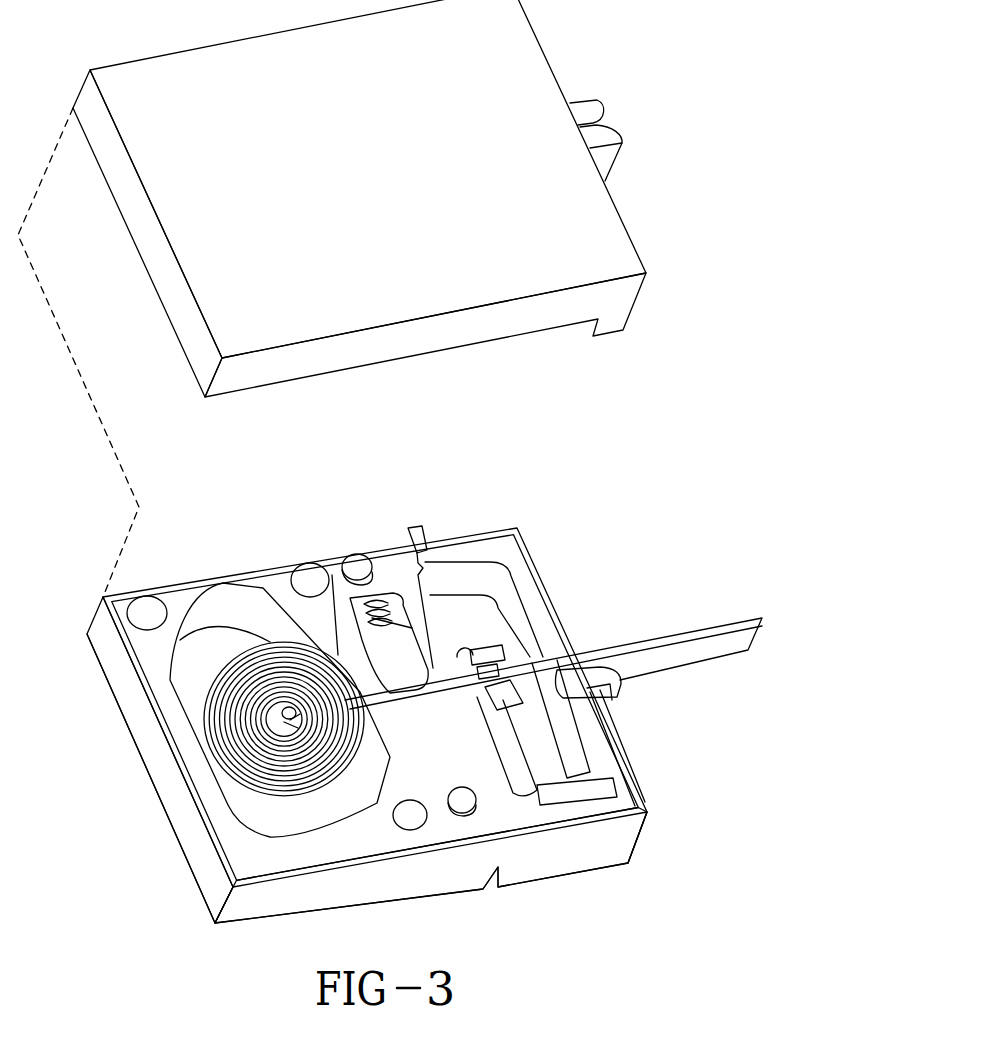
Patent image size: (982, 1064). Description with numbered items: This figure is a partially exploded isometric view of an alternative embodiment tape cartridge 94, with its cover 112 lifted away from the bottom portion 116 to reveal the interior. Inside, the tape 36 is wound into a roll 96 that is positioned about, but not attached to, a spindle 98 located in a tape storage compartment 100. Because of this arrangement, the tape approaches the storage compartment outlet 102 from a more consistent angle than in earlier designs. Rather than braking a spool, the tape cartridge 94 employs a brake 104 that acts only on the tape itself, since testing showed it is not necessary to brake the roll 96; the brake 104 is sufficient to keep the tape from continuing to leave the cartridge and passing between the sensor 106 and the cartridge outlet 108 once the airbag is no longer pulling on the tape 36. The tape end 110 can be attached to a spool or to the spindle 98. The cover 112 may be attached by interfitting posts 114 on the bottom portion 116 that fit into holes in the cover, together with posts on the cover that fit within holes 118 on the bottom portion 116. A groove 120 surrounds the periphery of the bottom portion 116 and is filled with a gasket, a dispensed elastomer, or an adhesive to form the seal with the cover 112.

The tape 36 is at (697, 632).
The tape cartridge 94 is at (537, 883).
The roll 96 is at (300, 828).
The spindle 98 is at (288, 712).
The tape storage compartment 100 is at (388, 719).
The storage compartment outlet 102 is at (360, 674).
The brake 104 is at (400, 670).
The sensor 106 is at (508, 706).
The cartridge outlet 108 is at (620, 115).
The tape end 110 is at (300, 730).
The cover 112 is at (605, 250).
The posts 114 is at (357, 568).
The bottom portion 116 is at (640, 847).
The holes 118 is at (150, 612).
The groove 120 is at (220, 843).